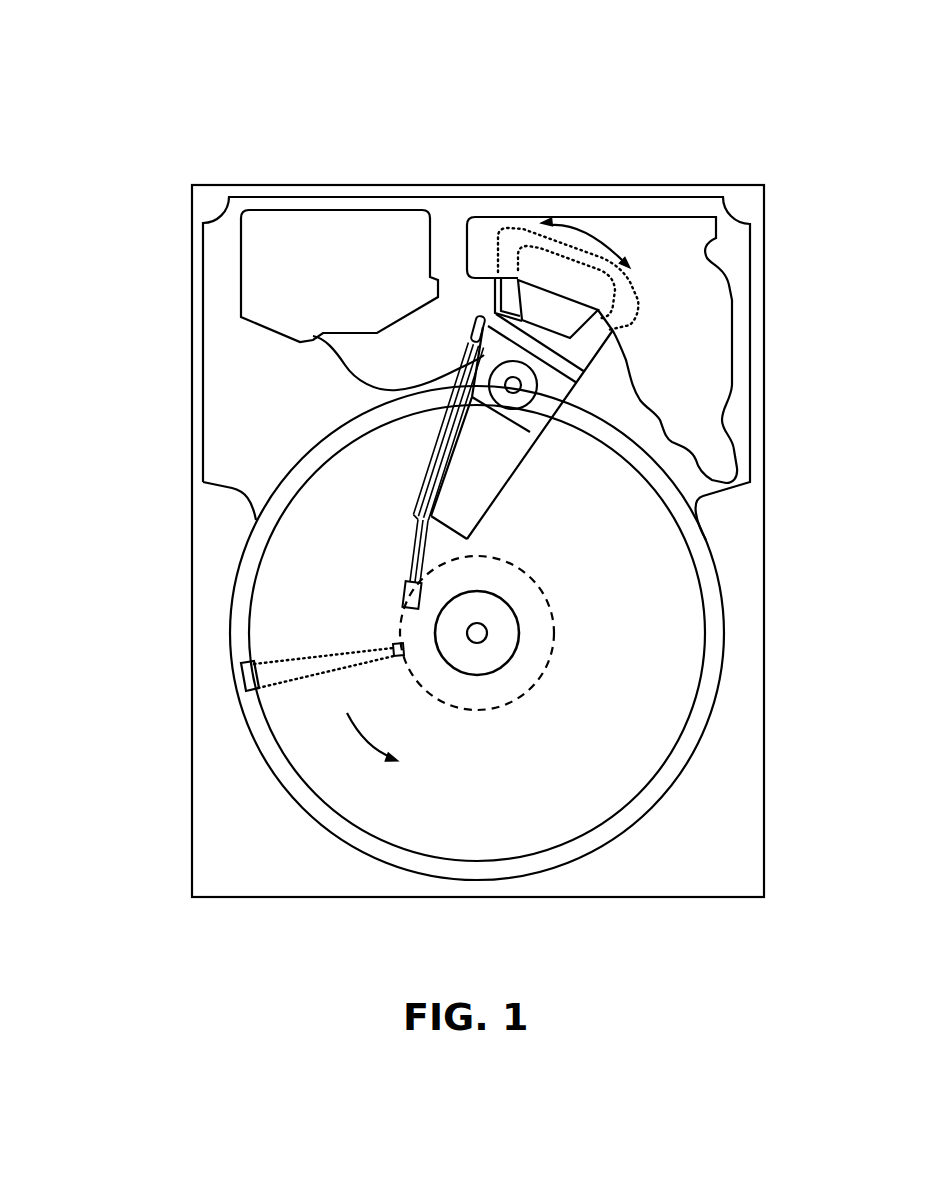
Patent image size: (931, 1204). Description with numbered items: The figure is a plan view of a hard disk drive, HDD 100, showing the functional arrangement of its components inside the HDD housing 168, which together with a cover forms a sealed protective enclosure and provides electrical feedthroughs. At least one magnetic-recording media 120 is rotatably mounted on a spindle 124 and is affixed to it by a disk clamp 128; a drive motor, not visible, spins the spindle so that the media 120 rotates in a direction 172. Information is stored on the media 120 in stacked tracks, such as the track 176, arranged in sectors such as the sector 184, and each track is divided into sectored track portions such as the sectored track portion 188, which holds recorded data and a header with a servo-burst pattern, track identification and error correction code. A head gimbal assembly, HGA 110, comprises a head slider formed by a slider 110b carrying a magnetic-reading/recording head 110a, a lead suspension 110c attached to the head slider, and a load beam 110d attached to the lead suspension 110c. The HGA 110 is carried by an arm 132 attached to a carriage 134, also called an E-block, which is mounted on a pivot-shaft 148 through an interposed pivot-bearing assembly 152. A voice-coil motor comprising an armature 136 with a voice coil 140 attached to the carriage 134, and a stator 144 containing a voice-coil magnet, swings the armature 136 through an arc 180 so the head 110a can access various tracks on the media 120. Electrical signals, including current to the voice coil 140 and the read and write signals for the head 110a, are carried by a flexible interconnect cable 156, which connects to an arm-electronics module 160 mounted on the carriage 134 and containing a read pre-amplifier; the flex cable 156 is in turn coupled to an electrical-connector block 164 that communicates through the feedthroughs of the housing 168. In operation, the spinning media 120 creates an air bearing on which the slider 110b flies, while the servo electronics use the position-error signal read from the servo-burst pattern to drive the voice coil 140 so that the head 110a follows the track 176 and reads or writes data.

The hard disk drive 100 is at (126, 74).
The HDD housing 168 is at (746, 196).
The electrical-connector block 164 is at (262, 272).
The flexible interconnect cable 156 is at (353, 364).
The stator 144 is at (700, 297).
The armature 136 is at (500, 312).
The voice coil 140 is at (492, 308).
The arc 180 is at (583, 233).
The arm 132 is at (470, 487).
The carriage 134 is at (530, 413).
The pivot-bearing assembly 152 is at (525, 395).
The pivot-shaft 148 is at (521, 385).
The arm-electronics module 160 is at (474, 348).
The head gimbal assembly 110 is at (130, 458).
The magnetic-reading/recording head 110a is at (403, 600).
The slider 110b is at (420, 573).
The lead suspension 110c is at (423, 548).
The load beam 110d is at (423, 520).
The magnetic-recording media 120 is at (640, 592).
The track 176 is at (546, 597).
The disk clamp 128 is at (500, 650).
The spindle 124 is at (482, 633).
The sector 184 is at (244, 678).
The sectored track portion 188 is at (397, 648).
The direction 172 is at (378, 746).